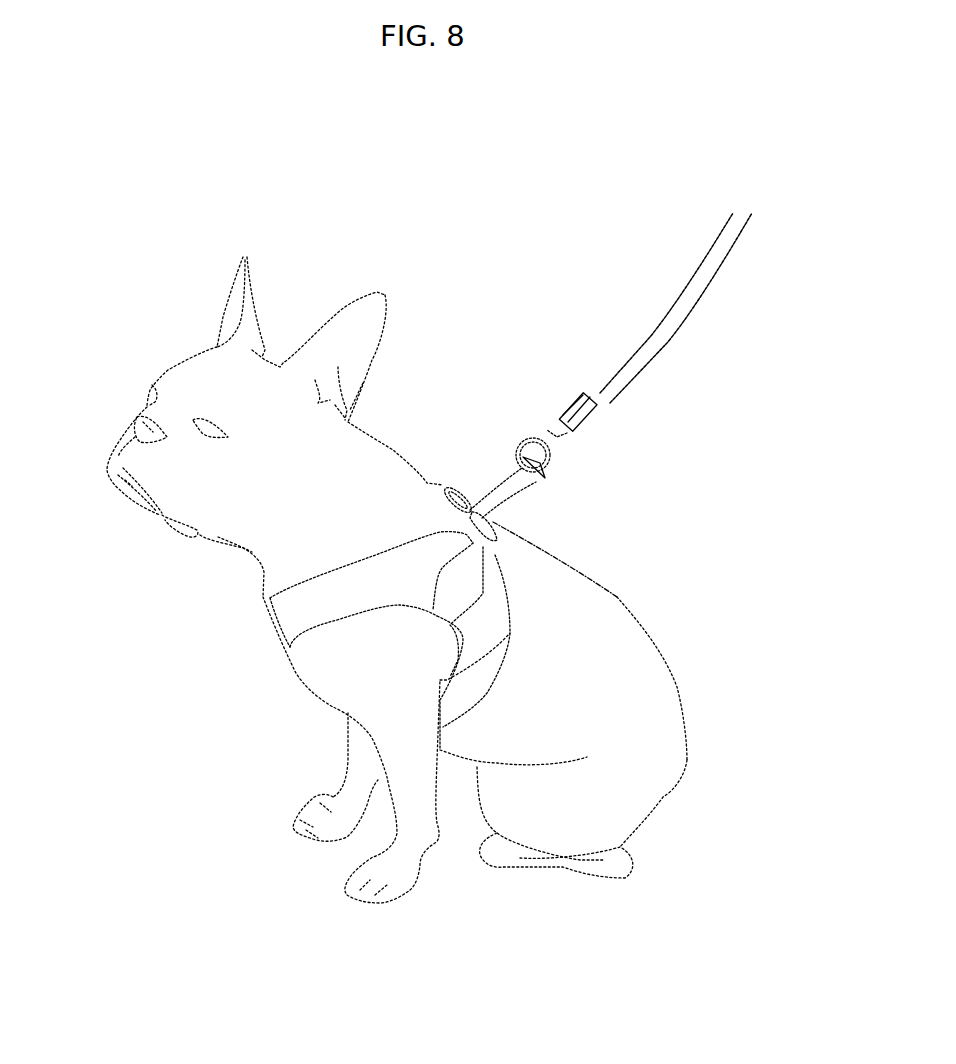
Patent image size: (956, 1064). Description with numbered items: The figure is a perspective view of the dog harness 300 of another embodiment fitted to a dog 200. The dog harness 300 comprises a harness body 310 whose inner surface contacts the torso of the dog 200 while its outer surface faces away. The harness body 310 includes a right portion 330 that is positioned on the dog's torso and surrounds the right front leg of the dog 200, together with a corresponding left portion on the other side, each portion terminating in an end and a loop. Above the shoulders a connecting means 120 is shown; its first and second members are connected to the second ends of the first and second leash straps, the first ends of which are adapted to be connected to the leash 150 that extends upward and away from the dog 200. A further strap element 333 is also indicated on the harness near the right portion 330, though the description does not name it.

The dog harness 300 is at (98, 175).
The leash 150 is at (677, 302).
The connecting means 120 is at (467, 503).
The dog 200 is at (515, 495).
The side strap 333 is at (478, 545).
The harness body 310 is at (273, 622).
The right portion 330 is at (490, 633).